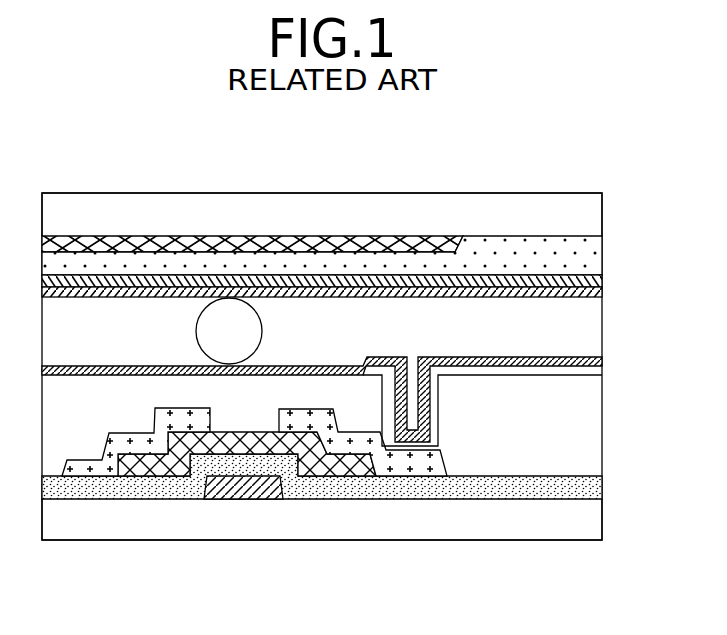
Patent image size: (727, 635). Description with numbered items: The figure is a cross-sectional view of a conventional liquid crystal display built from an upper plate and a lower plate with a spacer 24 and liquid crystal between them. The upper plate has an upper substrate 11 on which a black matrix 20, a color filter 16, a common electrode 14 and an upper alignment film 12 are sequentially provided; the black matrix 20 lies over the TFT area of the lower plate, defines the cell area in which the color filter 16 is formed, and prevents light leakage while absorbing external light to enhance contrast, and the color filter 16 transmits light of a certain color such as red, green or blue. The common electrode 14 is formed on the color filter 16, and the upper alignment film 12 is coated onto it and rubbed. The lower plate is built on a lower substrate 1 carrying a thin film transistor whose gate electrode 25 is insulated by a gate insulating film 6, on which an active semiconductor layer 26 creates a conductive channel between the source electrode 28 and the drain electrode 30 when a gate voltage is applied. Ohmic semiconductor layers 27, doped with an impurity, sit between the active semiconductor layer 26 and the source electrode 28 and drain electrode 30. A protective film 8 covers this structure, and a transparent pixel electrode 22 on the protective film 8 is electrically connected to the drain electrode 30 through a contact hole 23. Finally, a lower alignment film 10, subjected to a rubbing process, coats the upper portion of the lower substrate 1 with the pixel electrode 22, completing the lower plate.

The lower substrate 1 is at (588, 522).
The gate insulating film 6 is at (590, 490).
The protective film 8 is at (588, 433).
The lower alignment film 10 is at (590, 360).
The upper substrate 11 is at (588, 216).
The upper alignment film 12 is at (590, 292).
The common electrode 14 is at (590, 278).
The color filter 16 is at (588, 248).
The black matrix 20 is at (265, 236).
The pixel electrode 22 is at (590, 372).
The contact hole 23 is at (412, 358).
The spacer 24 is at (256, 323).
The gate electrode 25 is at (243, 499).
The active semiconductor layer 26 is at (178, 476).
The ohmic semiconductor layer 27 is at (352, 476).
The source electrode 28 is at (112, 476).
The drain electrode 30 is at (428, 476).